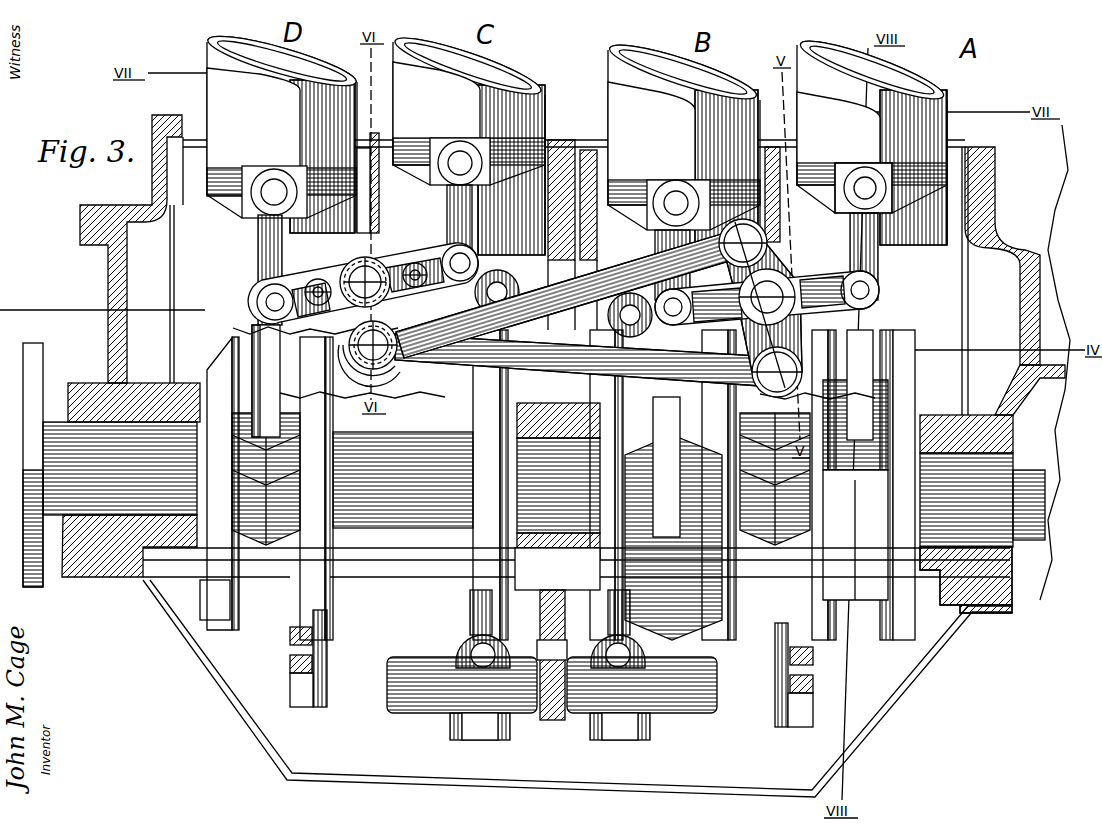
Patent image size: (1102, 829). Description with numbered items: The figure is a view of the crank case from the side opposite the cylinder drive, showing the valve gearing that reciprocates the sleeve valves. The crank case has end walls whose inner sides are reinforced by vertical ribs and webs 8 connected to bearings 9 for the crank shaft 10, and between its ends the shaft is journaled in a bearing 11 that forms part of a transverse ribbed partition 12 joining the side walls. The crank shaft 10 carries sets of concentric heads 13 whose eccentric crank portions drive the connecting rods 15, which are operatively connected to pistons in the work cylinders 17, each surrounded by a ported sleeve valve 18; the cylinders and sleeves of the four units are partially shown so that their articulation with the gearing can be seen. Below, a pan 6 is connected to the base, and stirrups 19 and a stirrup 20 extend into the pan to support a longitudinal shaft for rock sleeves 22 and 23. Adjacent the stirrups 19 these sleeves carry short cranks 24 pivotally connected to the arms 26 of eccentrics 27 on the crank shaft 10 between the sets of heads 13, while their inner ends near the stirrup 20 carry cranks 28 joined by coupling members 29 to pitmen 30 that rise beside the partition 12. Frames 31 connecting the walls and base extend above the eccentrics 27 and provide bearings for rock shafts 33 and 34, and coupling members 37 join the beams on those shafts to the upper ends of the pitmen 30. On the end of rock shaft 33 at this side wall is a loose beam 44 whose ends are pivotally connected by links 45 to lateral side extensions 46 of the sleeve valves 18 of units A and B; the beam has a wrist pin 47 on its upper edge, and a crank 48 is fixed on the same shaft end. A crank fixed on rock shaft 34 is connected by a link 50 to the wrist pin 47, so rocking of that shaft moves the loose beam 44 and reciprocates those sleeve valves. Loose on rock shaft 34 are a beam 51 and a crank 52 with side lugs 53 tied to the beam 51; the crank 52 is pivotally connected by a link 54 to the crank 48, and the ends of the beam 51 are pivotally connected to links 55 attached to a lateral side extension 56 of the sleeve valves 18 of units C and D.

The pan 6 is at (880, 716).
The vertical ribs and webs 8 is at (575, 357).
The bearings 9 is at (148, 383).
The crank shaft 10 is at (534, 465).
The bearing 11 is at (530, 560).
The transverse ribbed partition 12 is at (567, 140).
The concentric heads 13 is at (295, 552).
The connecting rods 15 is at (890, 328).
The work cylinders 17 is at (588, 139).
The sleeve valves 18 is at (593, 141).
The stirrups 19 is at (298, 707).
The stirrup 20 is at (548, 720).
The rock sleeve 22 is at (680, 713).
The rock sleeve 23 is at (420, 713).
The short cranks 24 is at (305, 652).
The arms 26 is at (335, 552).
The eccentrics 27 is at (521, 479).
The cranks 28 is at (480, 740).
The coupling members 29 is at (460, 652).
The pitmen 30 is at (468, 608).
The frames 31 is at (372, 198).
The rock shaft 33 is at (870, 306).
The rock shaft 34 is at (333, 272).
The coupling members 37 is at (512, 292).
The loose beam 44 is at (801, 292).
The links 45 is at (652, 232).
The lateral side extensions 46 is at (640, 185).
The wrist pin 47 is at (793, 248).
The crank 48 is at (795, 340).
The link 50 is at (640, 268).
The beam 51 is at (256, 302).
The crank 52 is at (248, 318).
The side lugs 53 is at (250, 278).
The link 54 is at (713, 365).
The links 55 is at (333, 272).
The lateral side extension 56 is at (258, 170).